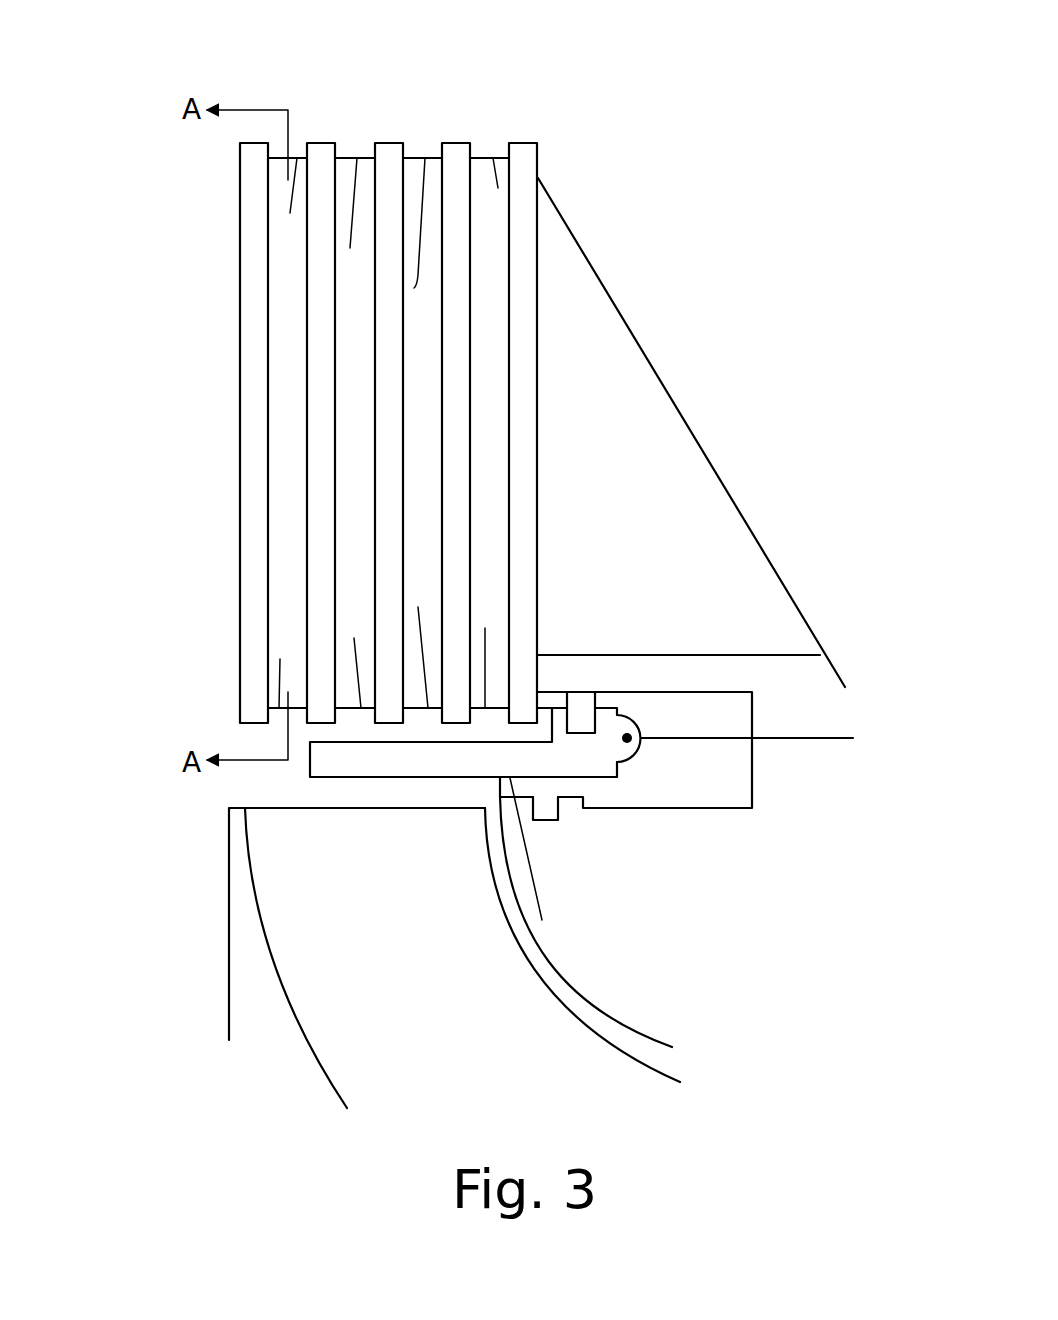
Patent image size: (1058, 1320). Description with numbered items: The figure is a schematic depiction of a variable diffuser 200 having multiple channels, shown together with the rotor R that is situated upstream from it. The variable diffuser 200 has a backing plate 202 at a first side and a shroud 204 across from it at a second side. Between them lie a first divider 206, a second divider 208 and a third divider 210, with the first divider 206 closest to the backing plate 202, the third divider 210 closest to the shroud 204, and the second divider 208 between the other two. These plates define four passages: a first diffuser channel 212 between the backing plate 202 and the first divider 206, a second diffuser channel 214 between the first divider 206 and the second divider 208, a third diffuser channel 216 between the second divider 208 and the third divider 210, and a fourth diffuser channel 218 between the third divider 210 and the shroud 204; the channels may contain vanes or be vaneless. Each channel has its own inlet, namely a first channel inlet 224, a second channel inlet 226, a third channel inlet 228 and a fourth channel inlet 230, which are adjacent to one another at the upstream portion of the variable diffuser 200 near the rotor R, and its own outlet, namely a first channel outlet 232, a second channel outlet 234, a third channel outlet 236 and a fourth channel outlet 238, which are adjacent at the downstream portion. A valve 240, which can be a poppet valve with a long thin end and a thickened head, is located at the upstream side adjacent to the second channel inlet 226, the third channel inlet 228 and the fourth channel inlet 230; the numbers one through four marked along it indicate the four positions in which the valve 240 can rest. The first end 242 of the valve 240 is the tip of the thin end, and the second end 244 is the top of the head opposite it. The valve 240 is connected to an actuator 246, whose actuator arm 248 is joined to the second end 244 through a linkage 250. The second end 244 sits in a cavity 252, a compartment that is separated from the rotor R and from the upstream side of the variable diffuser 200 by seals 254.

The variable diffuser 200 is at (652, 104).
The backing plate 202 is at (248, 423).
The shroud 204 is at (522, 375).
The first divider 206 is at (322, 143).
The second divider 208 is at (392, 143).
The third divider 210 is at (462, 143).
The first diffuser channel 212 is at (285, 458).
The second diffuser channel 214 is at (355, 480).
The third diffuser channel 216 is at (427, 317).
The fourth diffuser channel 218 is at (485, 455).
The first channel inlet 224 is at (280, 659).
The second channel inlet 226 is at (354, 638).
The third channel inlet 228 is at (418, 607).
The fourth channel inlet 230 is at (485, 628).
The first channel outlet 232 is at (290, 213).
The second channel outlet 234 is at (350, 248).
The third channel outlet 236 is at (414, 288).
The fourth channel outlet 238 is at (498, 188).
The valve 240 is at (542, 920).
The first end 242 is at (307, 770).
The second end 244 is at (605, 777).
The actuator 246 is at (690, 780).
The actuator arm 248 is at (793, 730).
The linkage 250 is at (630, 717).
The cavity 252 is at (727, 772).
The seals 254 is at (578, 712).
The rotor R is at (253, 960).